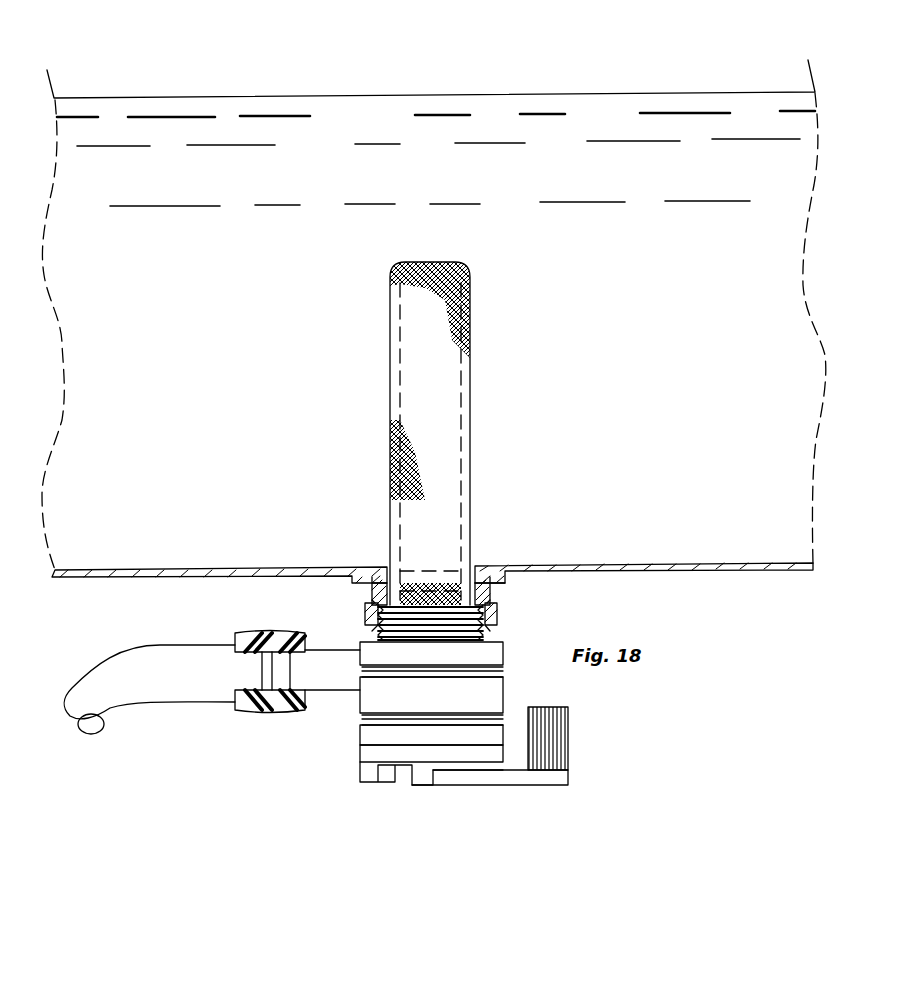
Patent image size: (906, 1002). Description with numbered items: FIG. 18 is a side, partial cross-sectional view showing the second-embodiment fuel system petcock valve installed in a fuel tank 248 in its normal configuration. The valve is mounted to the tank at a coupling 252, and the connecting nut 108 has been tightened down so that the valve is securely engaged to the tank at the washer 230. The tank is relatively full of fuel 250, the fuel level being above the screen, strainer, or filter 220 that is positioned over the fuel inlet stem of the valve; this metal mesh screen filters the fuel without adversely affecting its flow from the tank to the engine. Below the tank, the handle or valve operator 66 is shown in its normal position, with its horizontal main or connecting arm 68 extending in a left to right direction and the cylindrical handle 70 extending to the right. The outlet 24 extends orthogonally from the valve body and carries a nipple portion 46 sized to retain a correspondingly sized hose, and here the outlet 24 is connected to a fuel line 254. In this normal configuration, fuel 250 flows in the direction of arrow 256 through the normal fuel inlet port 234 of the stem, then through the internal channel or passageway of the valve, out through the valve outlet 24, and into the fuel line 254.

The fuel 250 is at (575, 178).
The fuel tank 248 is at (145, 574).
The coupling 252 is at (505, 580).
The screen, strainer, or filter 220 is at (468, 290).
The normal fuel inlet port 234 is at (402, 340).
The washer 230 is at (400, 588).
The arrow 256 is at (362, 215).
The connecting nut 108 is at (368, 618).
The handle or valve operator 66 is at (469, 795).
The main or connecting arm 68 is at (502, 780).
The cylindrical handle 70 is at (568, 736).
The outlet 24 is at (328, 672).
The nipple portion 46 is at (282, 677).
The fuel line 254 is at (143, 685).